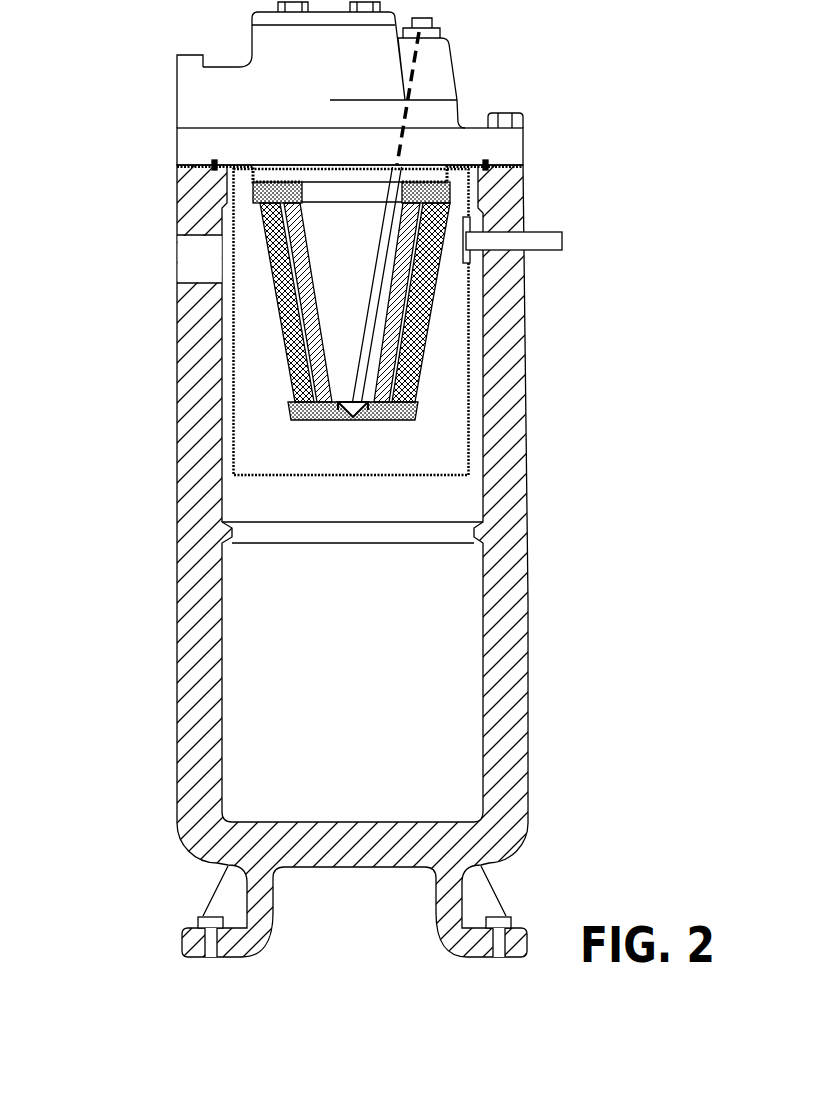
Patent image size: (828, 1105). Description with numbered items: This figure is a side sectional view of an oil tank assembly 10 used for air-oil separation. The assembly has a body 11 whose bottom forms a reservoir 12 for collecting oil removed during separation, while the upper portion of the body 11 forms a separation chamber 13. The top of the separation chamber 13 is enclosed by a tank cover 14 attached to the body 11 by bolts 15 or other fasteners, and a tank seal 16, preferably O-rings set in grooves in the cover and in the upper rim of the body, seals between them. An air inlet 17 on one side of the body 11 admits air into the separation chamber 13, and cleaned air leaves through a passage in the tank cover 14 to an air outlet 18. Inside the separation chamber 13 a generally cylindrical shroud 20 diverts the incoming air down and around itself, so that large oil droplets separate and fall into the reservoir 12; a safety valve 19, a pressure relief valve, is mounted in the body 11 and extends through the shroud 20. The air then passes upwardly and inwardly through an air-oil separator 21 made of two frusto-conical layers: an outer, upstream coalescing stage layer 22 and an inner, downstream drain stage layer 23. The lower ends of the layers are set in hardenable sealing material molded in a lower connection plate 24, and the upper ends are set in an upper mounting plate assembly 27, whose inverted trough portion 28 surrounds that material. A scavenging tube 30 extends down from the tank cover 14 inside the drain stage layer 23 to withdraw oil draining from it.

The oil tank assembly 10 is at (548, 495).
The body 11 is at (517, 700).
The reservoir 12 is at (237, 629).
The separation chamber 13 is at (223, 330).
The tank cover 14 is at (440, 75).
The bolts 15 is at (505, 115).
The tank seal 16 is at (485, 163).
The air inlet 17 is at (198, 236).
The air outlet 18 is at (187, 97).
The safety valve 19 is at (525, 240).
The shroud 20 is at (233, 360).
The air-oil separator 21 is at (425, 292).
The coalescing stage layer 22 is at (408, 373).
The drain stage layer 23 is at (387, 342).
The lower connection plate 24 is at (305, 418).
The upper mounting plate assembly 27 is at (453, 190).
The inverted trough portion 28 is at (257, 170).
The scavenging tube 30 is at (383, 263).